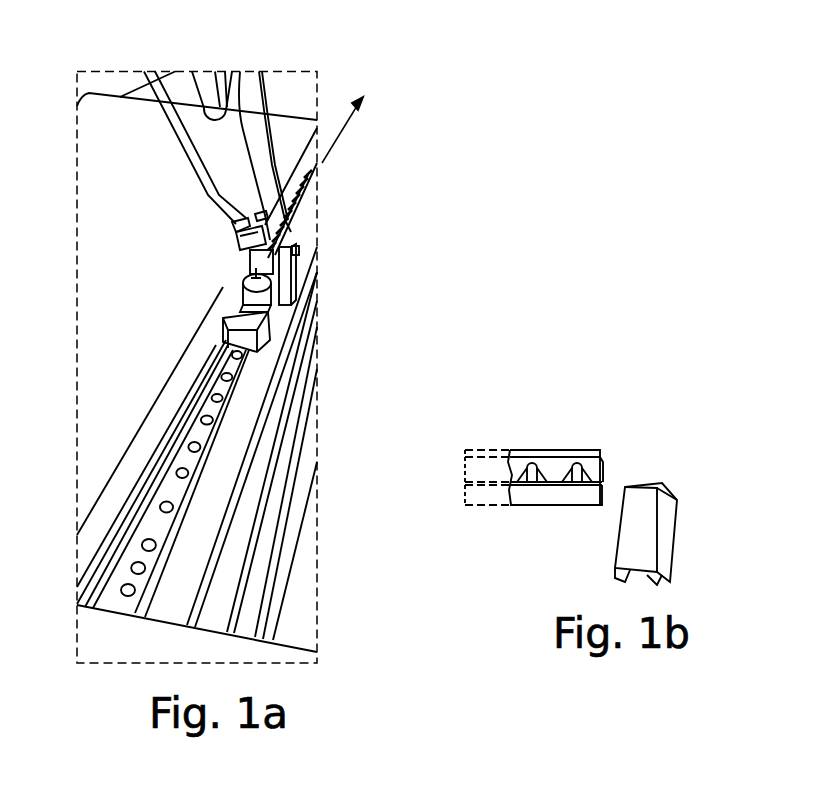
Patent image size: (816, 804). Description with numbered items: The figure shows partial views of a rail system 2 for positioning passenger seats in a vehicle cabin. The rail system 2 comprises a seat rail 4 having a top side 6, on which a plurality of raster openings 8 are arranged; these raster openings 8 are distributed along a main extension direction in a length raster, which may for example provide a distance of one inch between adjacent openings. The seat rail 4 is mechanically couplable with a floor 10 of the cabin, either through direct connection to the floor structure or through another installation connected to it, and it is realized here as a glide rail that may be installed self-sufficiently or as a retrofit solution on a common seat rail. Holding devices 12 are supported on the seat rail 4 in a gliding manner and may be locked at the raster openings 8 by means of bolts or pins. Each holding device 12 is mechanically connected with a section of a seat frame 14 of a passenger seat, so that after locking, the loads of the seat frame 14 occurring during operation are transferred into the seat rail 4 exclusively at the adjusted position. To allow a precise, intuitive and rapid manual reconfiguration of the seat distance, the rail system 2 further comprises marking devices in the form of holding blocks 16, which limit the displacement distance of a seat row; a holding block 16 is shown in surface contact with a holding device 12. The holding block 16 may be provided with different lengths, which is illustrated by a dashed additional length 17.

In FIG. 1A, the rail system 2 is at (340, 190).
In FIG. 1A, the seat rail 4 is at (208, 442).
In FIG. 1A, the top side 6 is at (168, 492).
In FIG. 1A, the raster openings 8 is at (166, 507).
In FIG. 1A, the floor 10 is at (297, 608).
In FIG. 1A, the holding device 12 is at (290, 278).
In FIG. 1A, the seat frame 14 is at (249, 107).
In FIG. 1A, the holding block 16 is at (282, 312).
In FIG. 1B, the holding block 16 is at (553, 452).
In FIG. 1B, the additional length 17 is at (492, 432).